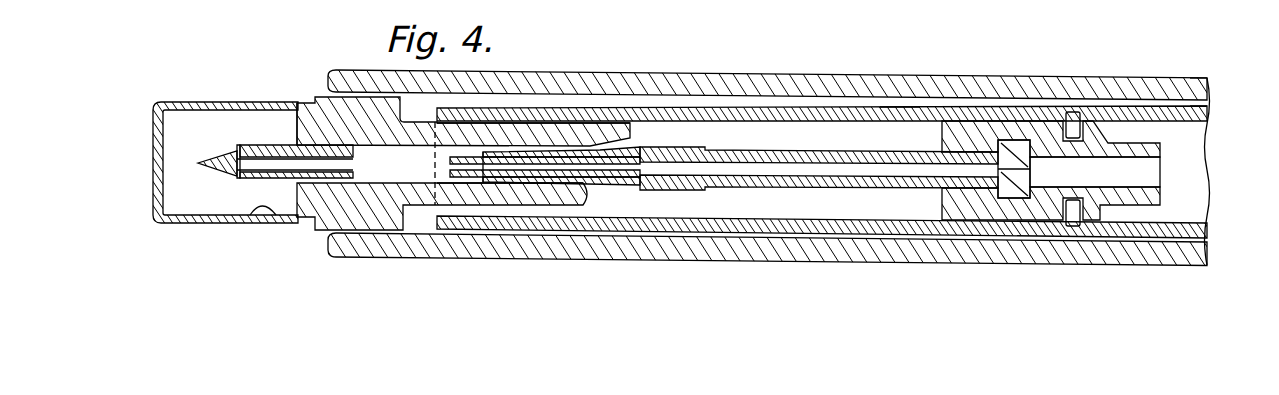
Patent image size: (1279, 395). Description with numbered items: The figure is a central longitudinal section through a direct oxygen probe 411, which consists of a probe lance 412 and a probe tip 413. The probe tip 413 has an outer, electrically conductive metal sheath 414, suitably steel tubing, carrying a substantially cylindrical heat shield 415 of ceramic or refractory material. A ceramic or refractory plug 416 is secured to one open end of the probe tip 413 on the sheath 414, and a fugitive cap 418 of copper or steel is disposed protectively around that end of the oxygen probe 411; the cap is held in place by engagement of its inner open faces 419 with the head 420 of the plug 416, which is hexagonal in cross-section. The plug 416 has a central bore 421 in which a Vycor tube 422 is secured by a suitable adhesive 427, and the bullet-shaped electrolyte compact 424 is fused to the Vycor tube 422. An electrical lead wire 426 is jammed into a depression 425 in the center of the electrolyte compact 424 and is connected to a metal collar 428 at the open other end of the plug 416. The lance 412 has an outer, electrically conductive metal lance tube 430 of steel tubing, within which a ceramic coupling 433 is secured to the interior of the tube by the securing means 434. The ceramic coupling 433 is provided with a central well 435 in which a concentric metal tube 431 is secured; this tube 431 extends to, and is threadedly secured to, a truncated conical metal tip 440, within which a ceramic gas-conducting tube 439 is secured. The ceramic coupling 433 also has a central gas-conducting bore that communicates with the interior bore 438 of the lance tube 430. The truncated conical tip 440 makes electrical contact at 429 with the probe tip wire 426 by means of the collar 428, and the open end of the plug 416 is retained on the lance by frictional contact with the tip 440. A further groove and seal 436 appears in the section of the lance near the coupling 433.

The direct oxygen probe 411 is at (838, 54).
The probe lance 412 is at (1213, 131).
The probe tip 413 is at (1242, 92).
The metal sheath 414 is at (765, 238).
The heat shield 415 is at (850, 236).
The plug 416 is at (347, 207).
The fugitive cap 418 is at (204, 224).
The inner open faces 419 is at (256, 218).
The head 420 is at (297, 142).
The central bore 421 is at (433, 193).
The Vycor tube 422 is at (246, 148).
The electrolyte compact 424 is at (205, 152).
The depression 425 is at (236, 168).
The electrical lead wire 426 is at (470, 148).
The adhesive 427 is at (305, 140).
The metal collar 428 is at (588, 146).
The electrical contact 429 is at (628, 140).
The lance tube 430 is at (900, 113).
The concentric metal tube 431 is at (787, 150).
The ceramic coupling 433 is at (1006, 132).
The securing means 434 is at (1074, 111).
The central well 435 is at (954, 205).
The lower O-ring seal 436 is at (1056, 182).
The interior bore 438 is at (1175, 200).
The ceramic gas-conducting tube 439 is at (502, 165).
The truncated conical metal tip 440 is at (660, 146).